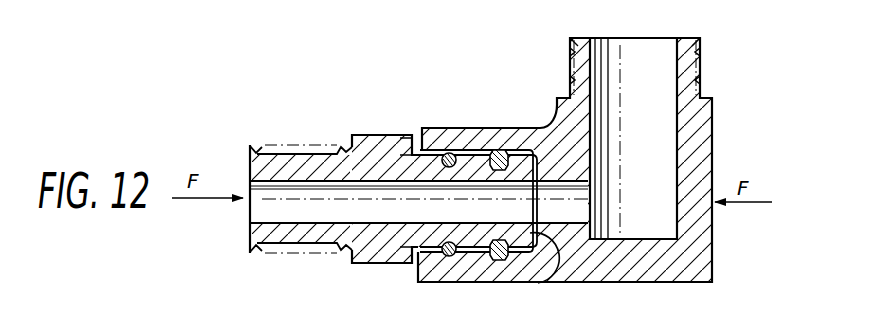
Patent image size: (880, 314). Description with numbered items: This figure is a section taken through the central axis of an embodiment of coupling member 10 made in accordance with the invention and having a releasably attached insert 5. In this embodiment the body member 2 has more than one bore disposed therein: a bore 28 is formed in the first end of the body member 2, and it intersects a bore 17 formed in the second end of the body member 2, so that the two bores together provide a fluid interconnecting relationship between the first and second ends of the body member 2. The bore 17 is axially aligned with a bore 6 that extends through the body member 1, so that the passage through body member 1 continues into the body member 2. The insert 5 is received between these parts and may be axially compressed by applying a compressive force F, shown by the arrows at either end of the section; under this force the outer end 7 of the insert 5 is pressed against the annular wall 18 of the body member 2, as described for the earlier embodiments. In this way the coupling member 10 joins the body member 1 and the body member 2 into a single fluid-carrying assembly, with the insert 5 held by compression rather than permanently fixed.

The body member 1 is at (390, 137).
The body member 2 is at (711, 148).
The insert 5 is at (412, 267).
The bore 6 is at (262, 205).
The outer end 7 is at (525, 282).
The coupling member 10 is at (573, 154).
The bore 17 is at (597, 201).
The annular wall 18 is at (547, 281).
The bore 28 is at (641, 50).